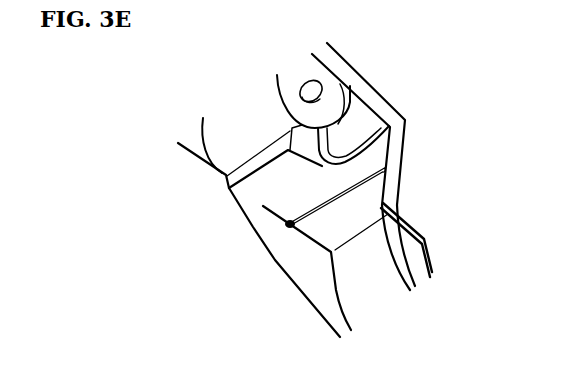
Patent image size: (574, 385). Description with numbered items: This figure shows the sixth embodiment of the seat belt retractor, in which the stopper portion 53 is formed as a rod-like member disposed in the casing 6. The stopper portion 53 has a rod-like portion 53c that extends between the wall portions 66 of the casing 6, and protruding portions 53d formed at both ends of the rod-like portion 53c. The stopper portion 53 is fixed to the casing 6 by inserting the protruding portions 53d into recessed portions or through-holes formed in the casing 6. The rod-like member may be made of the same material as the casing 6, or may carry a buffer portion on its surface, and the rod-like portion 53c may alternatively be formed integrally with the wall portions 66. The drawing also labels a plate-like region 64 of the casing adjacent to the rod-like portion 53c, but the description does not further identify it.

The casing 6 is at (203, 170).
The wall portions 66 is at (388, 124).
The plate 64 is at (283, 199).
The stopper portion 53 is at (349, 207).
The rod-like portion 53c is at (328, 200).
The protruding portions 53d is at (290, 226).